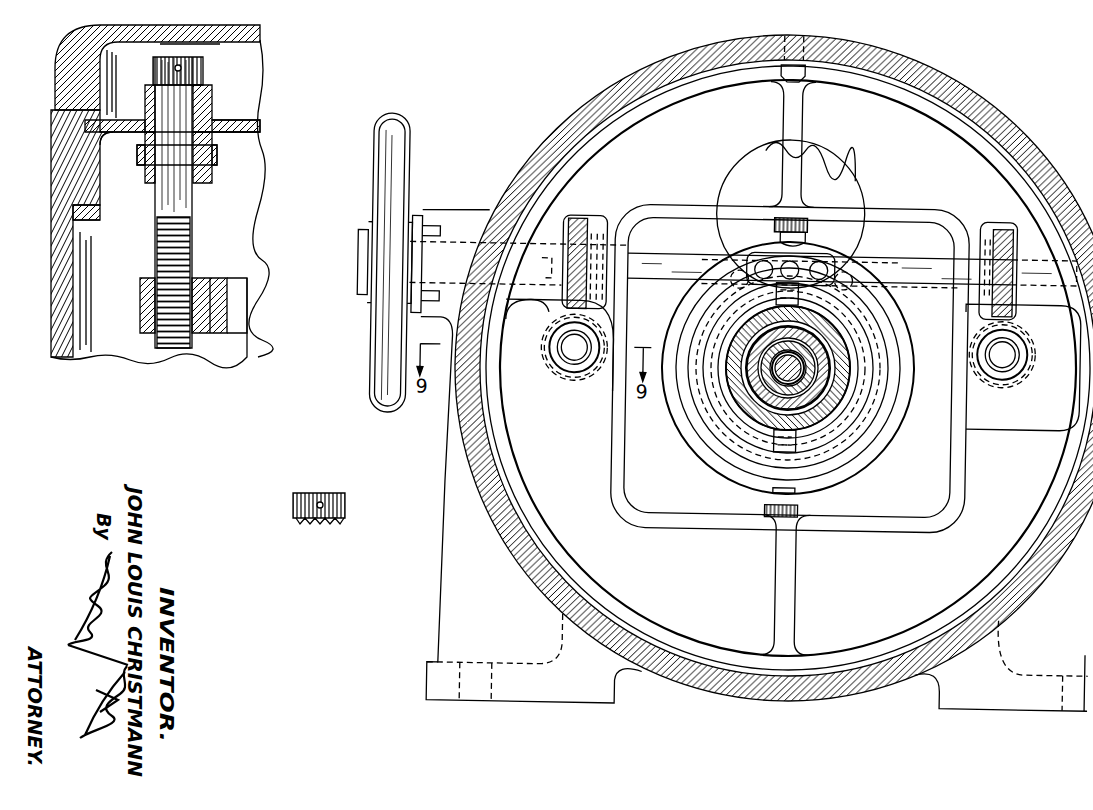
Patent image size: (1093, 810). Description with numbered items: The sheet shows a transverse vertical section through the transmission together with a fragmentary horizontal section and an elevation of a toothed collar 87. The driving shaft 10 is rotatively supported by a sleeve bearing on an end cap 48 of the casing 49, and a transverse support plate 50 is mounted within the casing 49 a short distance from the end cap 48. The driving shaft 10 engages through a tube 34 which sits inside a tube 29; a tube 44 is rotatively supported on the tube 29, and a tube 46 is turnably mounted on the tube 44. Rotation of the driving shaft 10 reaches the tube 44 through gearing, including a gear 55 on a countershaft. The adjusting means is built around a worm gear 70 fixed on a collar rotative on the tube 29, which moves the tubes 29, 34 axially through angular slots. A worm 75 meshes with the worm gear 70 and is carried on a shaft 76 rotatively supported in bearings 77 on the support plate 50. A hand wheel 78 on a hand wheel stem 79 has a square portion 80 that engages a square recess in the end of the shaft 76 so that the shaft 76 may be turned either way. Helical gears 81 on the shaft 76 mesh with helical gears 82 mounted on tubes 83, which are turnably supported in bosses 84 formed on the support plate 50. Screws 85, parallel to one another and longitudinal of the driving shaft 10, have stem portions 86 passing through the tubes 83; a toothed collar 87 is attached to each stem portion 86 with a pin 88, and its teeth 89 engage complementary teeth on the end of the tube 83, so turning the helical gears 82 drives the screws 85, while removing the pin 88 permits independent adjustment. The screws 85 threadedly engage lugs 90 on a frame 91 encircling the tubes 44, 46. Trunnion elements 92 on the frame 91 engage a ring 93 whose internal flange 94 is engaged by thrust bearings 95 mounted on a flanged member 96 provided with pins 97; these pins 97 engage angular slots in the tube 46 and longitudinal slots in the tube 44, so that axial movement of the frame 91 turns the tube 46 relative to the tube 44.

In FIG. 2, the driving shaft 10 is at (840, 347).
In FIG. 2, the tube 29 is at (815, 379).
In FIG. 2, the tube 34 is at (805, 364).
In FIG. 2, the tube 44 is at (812, 392).
In FIG. 2, the tube 46 is at (815, 418).
In FIG. 9, the end cap 48 is at (262, 33).
In FIG. 9, the casing 49 is at (60, 356).
In FIG. 2, the casing 49 is at (1012, 134).
In FIG. 9, the transverse support plate 50 is at (262, 128).
In FIG. 2, the transverse support plate 50 is at (655, 629).
In FIG. 2, the gear 55 is at (835, 153).
In FIG. 2, the worm gear 70 is at (870, 312).
In FIG. 2, the worm 75 is at (868, 237).
In FIG. 2, the shaft 76 is at (895, 263).
In FIG. 2, the bearings 77 is at (554, 234).
In FIG. 2, the hand wheel 78 is at (408, 167).
In FIG. 2, the hand wheel stem 79 is at (450, 235).
In FIG. 2, the square portion 80 is at (532, 294).
In FIG. 2, the helical gears 81 is at (588, 220).
In FIG. 9, the helical gears 82 is at (219, 155).
In FIG. 2, the helical gears 82 is at (562, 384).
In FIG. 9, the tubes 83 is at (214, 112).
In FIG. 9, the bosses 84 is at (214, 102).
In FIG. 9, the screws 85 is at (180, 247).
In FIG. 2, the screws 85 is at (574, 352).
In FIG. 9, the stem portions 86 is at (200, 44).
In FIG. 9, the toothed collar 87 is at (150, 62).
In FIG. 10, the toothed collar 87 is at (346, 503).
In FIG. 9, the pin 88 is at (181, 68).
In FIG. 9, the teeth 89 is at (205, 87).
In FIG. 10, the teeth 89 is at (344, 521).
In FIG. 9, the lugs 90 is at (139, 305).
In FIG. 2, the lugs 90 is at (583, 376).
In FIG. 9, the frame 91 is at (247, 305).
In FIG. 2, the frame 91 is at (742, 522).
In FIG. 2, the trunnion elements 92 is at (792, 220).
In FIG. 2, the ring 93 is at (883, 460).
In FIG. 2, the internal flange 94 is at (708, 462).
In FIG. 2, the thrust bearings 95 is at (790, 214).
In FIG. 2, the flanged member 96 is at (700, 434).
In FIG. 2, the pins 97 is at (805, 300).